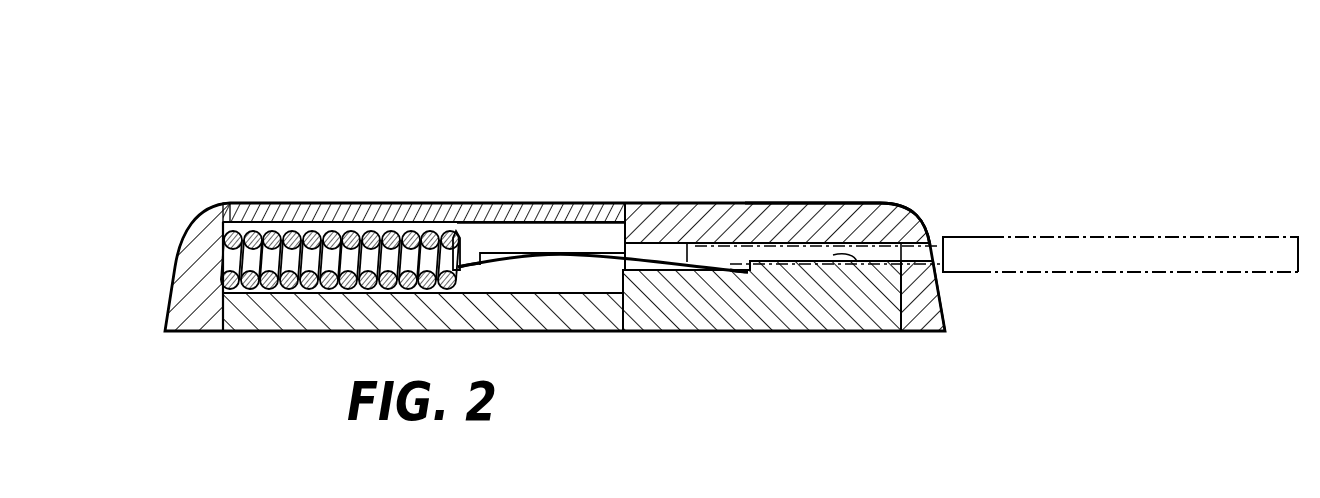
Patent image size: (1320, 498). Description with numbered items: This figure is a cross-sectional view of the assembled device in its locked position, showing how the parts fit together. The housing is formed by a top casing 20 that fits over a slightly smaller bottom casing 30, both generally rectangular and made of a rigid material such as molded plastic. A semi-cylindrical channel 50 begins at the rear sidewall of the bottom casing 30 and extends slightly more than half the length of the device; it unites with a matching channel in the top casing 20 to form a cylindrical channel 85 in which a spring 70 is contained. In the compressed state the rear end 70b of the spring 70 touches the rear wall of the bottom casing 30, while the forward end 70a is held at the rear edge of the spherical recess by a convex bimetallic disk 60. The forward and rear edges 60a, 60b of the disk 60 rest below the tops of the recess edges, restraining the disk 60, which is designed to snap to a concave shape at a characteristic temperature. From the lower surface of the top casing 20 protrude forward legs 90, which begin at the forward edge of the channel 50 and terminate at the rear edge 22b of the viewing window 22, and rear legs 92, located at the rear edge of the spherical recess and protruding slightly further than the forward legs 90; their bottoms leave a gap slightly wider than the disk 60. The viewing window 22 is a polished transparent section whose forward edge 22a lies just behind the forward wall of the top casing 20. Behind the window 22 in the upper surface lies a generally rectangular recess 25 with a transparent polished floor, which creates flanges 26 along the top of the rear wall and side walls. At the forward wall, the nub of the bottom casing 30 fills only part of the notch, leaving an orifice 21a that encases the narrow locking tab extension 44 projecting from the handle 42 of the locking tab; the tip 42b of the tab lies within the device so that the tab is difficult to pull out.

The top casing 20 is at (138, 308).
The orifice 21a is at (937, 237).
The viewing window 22 is at (822, 203).
The forward edge of the window 22a is at (873, 203).
The rear edge of the window 22b is at (780, 203).
The recess 25 is at (412, 206).
The flanges 26 is at (192, 218).
The bottom casing 30 is at (280, 357).
The handle 42 is at (1048, 271).
The rod tip 42b is at (952, 263).
The locking tab extension 44 is at (857, 262).
The semi-cylindrical channel 50 is at (555, 282).
The bimetallic disk 60 is at (615, 273).
The forward edge of the disk 60a is at (727, 278).
The rear edge of the disk 60b is at (500, 272).
The spring 70 is at (340, 201).
The forward end of the spring 70a is at (364, 268).
The rear end of the spring 70b is at (240, 238).
The cylindrical channel 85 is at (505, 240).
The forward legs 90 is at (630, 222).
The rear legs 92 is at (470, 238).